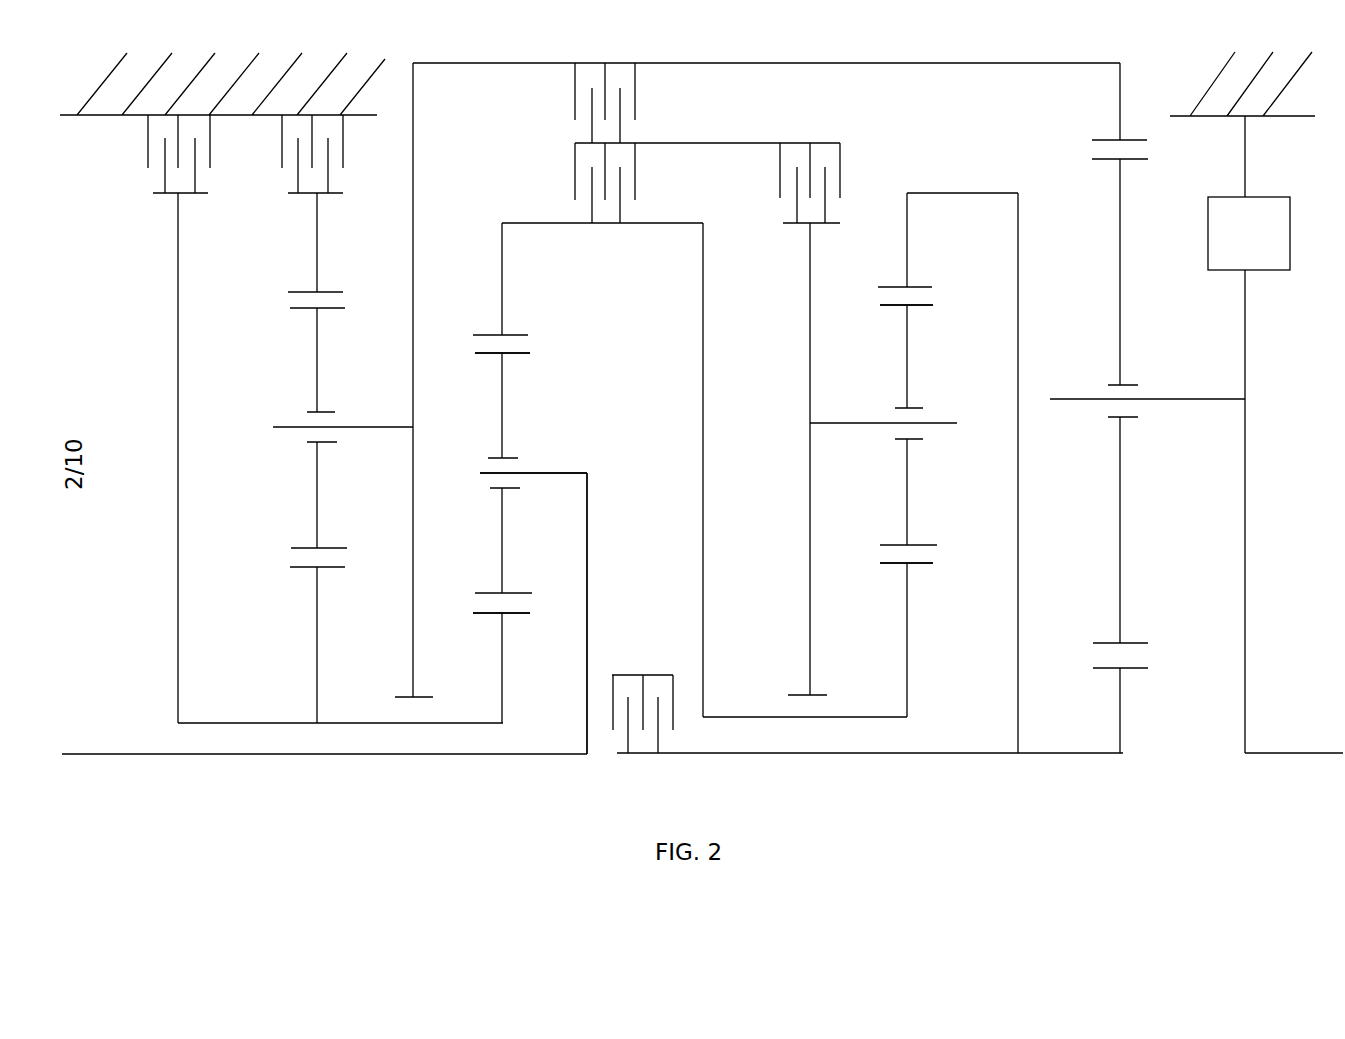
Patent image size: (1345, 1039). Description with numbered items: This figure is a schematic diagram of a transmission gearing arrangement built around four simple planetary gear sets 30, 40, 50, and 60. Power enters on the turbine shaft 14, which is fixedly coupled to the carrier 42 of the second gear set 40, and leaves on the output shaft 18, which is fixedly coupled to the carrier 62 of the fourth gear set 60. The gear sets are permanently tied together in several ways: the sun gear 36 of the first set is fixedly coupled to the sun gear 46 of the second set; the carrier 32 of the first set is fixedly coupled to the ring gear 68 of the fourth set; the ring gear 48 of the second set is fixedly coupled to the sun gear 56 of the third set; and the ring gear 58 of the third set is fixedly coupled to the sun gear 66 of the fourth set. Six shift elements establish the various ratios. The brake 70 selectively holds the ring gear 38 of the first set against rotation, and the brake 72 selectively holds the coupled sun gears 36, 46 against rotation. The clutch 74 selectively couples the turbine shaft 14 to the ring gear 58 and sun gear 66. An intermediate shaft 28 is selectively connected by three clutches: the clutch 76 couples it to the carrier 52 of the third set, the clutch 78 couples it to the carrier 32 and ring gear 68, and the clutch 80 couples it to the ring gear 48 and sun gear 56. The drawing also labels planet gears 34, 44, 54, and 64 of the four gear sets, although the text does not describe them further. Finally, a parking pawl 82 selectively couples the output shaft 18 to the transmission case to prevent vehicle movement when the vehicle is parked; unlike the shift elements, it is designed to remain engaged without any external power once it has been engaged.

The turbine shaft 14 is at (177, 757).
The output shaft 18 is at (1308, 752).
The intermediate shaft 28 is at (741, 147).
The planetary gear set 30 is at (343, 504).
The carrier 32 is at (413, 240).
The gear 34 is at (322, 368).
The sun gear 36 is at (315, 608).
The ring gear 38 is at (317, 250).
The planetary gear set 40 is at (500, 520).
The carrier 42 is at (588, 565).
The gear 44 is at (505, 415).
The sun gear 46 is at (502, 655).
The ring gear 48 is at (502, 297).
The planetary gear set 50 is at (870, 504).
The carrier 52 is at (810, 388).
The gear 54 is at (910, 367).
The sun gear 56 is at (905, 605).
The ring gear 58 is at (907, 248).
The planetary gear set 60 is at (1147, 442).
The carrier 62 is at (1245, 442).
The gear 64 is at (1122, 332).
The sun gear 66 is at (1122, 713).
The ring gear 68 is at (1120, 112).
The brake 70 is at (283, 138).
The brake 72 is at (150, 138).
The clutch 74 is at (653, 672).
The clutch 76 is at (790, 143).
The clutch 78 is at (575, 110).
The clutch 80 is at (575, 167).
The parking pawl 82 is at (1290, 245).